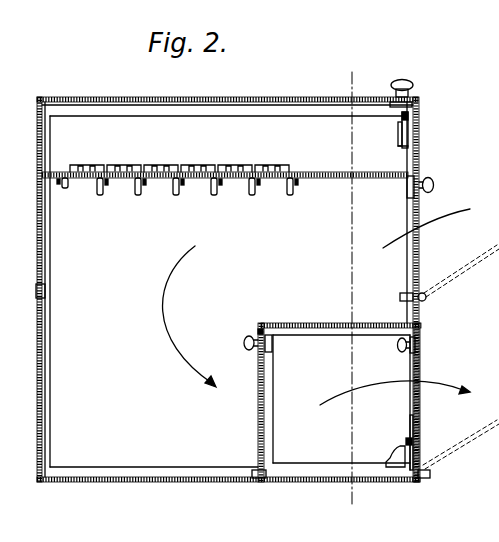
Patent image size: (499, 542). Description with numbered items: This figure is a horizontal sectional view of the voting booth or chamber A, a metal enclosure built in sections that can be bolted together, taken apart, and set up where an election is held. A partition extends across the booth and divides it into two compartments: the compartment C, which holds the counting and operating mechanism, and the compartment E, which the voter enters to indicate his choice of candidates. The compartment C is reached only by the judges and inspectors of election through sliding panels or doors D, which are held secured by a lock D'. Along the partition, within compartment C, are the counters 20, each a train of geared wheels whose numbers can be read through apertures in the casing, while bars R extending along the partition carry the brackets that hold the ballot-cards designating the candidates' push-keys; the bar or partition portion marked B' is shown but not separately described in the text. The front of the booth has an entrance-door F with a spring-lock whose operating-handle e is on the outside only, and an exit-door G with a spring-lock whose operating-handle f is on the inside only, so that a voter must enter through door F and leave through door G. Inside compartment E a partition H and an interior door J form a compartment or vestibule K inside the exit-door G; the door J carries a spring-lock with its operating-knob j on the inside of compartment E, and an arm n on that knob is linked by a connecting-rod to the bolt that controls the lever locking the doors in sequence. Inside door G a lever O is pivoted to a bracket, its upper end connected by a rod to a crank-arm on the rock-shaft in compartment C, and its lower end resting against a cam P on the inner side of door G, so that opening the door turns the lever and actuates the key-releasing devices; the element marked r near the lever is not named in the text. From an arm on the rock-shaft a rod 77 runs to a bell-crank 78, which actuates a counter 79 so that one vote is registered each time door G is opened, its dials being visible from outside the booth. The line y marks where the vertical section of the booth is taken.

The booth or chamber A is at (43, 352).
The sliding panels or doors D is at (232, 89).
The lock D' is at (413, 93).
The compartment C is at (228, 129).
The partition bar B' is at (225, 184).
The counters 20 is at (290, 164).
The bars R is at (66, 185).
The compartment E is at (202, 313).
The rod 77 is at (401, 119).
The bell-crank 78 is at (402, 131).
The counter 79 is at (402, 146).
The operating-handle e is at (435, 185).
The entrance-door F is at (420, 249).
The partition H is at (341, 320).
The interior door J is at (266, 409).
The exit-door G is at (421, 406).
The compartment or vestibule K is at (371, 422).
The arm n is at (258, 333).
The operating-knob j is at (253, 352).
The operating-handle f is at (400, 352).
The lever O is at (420, 441).
The rod catch r is at (406, 438).
The cam P is at (399, 453).
The section line y is at (350, 286).